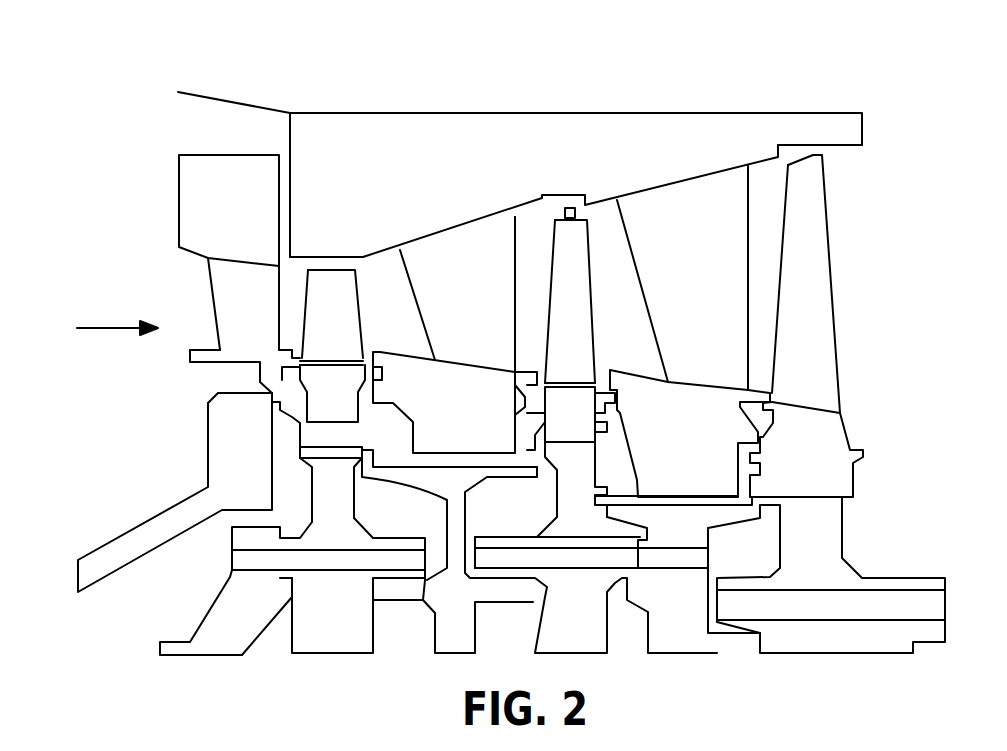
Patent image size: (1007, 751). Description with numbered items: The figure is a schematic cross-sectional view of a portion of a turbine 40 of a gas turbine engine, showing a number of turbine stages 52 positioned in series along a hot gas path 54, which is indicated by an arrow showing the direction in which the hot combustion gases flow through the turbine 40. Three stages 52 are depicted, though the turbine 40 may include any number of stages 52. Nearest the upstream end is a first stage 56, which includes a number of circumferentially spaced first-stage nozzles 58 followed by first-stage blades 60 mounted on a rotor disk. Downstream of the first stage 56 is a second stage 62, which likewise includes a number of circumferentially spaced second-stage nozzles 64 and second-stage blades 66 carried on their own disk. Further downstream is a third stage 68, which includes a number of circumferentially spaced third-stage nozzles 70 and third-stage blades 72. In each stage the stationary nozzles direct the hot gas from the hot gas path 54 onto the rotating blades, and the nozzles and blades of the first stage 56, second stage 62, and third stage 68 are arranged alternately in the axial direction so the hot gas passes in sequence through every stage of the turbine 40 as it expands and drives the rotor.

The turbine 40 is at (130, 95).
The stages 52 is at (160, 197).
The hot gas path 54 is at (102, 328).
The first stage 56 is at (335, 223).
The first-stage nozzles 58 is at (235, 300).
The first-stage blades 60 is at (363, 327).
The second stage 62 is at (528, 183).
The second-stage nozzles 64 is at (465, 278).
The second-stage blades 66 is at (572, 303).
The third stage 68 is at (728, 145).
The third-stage nozzles 70 is at (723, 257).
The third-stage blades 72 is at (813, 300).